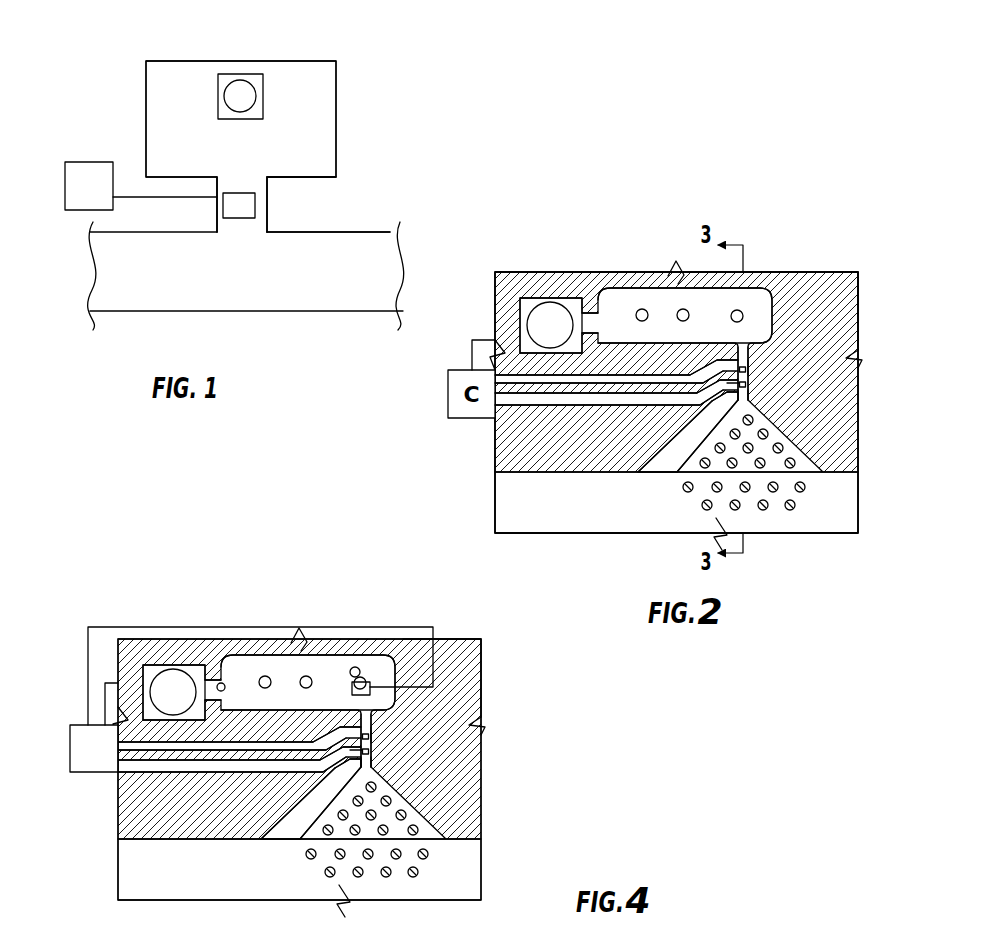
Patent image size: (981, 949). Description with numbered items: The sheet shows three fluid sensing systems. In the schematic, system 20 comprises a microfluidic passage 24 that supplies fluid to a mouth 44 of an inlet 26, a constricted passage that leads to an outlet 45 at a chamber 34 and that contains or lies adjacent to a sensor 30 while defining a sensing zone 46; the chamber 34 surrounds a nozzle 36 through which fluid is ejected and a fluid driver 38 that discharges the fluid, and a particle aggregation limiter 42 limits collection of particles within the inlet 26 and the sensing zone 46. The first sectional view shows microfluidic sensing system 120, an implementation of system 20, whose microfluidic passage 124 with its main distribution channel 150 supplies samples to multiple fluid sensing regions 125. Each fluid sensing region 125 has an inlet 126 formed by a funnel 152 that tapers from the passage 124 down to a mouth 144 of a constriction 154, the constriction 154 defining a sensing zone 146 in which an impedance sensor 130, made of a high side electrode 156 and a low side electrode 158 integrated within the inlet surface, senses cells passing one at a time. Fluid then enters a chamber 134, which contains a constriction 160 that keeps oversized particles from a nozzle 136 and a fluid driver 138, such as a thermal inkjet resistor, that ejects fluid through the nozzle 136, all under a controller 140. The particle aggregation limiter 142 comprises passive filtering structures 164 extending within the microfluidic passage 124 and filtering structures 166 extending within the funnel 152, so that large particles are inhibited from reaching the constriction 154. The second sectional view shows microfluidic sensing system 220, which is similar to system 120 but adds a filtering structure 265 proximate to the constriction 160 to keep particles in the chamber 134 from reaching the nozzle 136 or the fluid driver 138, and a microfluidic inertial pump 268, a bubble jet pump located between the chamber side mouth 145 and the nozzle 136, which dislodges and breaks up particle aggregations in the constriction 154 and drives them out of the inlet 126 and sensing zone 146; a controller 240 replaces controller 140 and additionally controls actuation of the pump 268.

In FIG. 1, the system 20 is at (202, 127).
In FIG. 1, the microfluidic passage 24 is at (246, 249).
In FIG. 1, the inlet 26 is at (279, 204).
In FIG. 1, the sensor 30 is at (239, 277).
In FIG. 1, the chamber 34 is at (267, 146).
In FIG. 1, the nozzle 36 is at (254, 60).
In FIG. 1, the fluid driver 38 is at (217, 61).
In FIG. 1, the particle aggregation limiter 42 is at (84, 160).
In FIG. 1, the mouth 44 is at (325, 258).
In FIG. 1, the outlet 45 is at (299, 150).
In FIG. 1, the sensing zone 46 is at (165, 212).
In FIG. 2, the microfluidic sensing system 120 is at (676, 370).
In FIG. 2, the microfluidic passage 124 is at (709, 405).
In FIG. 4, the microfluidic passage 124 is at (332, 772).
In FIG. 2, the fluid sensing region 125 is at (676, 359).
In FIG. 4, the fluid sensing region 125 is at (299, 691).
In FIG. 2, the inlet 126 is at (831, 378).
In FIG. 4, the inlet 126 is at (454, 745).
In FIG. 2, the sensor 130 is at (702, 342).
In FIG. 4, the sensor 130 is at (323, 709).
In FIG. 2, the chamber 134 is at (685, 271).
In FIG. 4, the chamber 134 is at (308, 634).
In FIG. 2, the nozzle 136 is at (504, 278).
In FIG. 4, the nozzle 136 is at (126, 644).
In FIG. 2, the fluid driver 138 is at (569, 283).
In FIG. 4, the fluid driver 138 is at (111, 692).
In FIG. 2, the controller 140 is at (464, 358).
In FIG. 2, the particle aggregation limiter 142 is at (847, 532).
In FIG. 4, the particle aggregation limiter 142 is at (467, 899).
In FIG. 2, the mouth 144 is at (831, 405).
In FIG. 4, the mouth 144 is at (453, 773).
In FIG. 2, the chamber side mouth 145 is at (853, 300).
In FIG. 4, the chamber side mouth 145 is at (474, 667).
In FIG. 2, the sensing zone 146 is at (616, 443).
In FIG. 4, the sensing zone 146 is at (239, 809).
In FIG. 2, the main distribution channel 150 is at (712, 502).
In FIG. 4, the main distribution channel 150 is at (332, 869).
In FIG. 2, the funnel 152 is at (688, 475).
In FIG. 4, the funnel 152 is at (311, 843).
In FIG. 2, the constriction 154 is at (640, 465).
In FIG. 4, the constriction 154 is at (261, 854).
In FIG. 2, the high side electrode 156 is at (704, 314).
In FIG. 4, the high side electrode 156 is at (346, 680).
In FIG. 2, the low side electrode 158 is at (835, 355).
In FIG. 4, the low side electrode 158 is at (455, 720).
In FIG. 2, the constriction 160 is at (610, 253).
In FIG. 4, the constriction 160 is at (187, 631).
In FIG. 2, the filtering structures 164 is at (744, 533).
In FIG. 4, the filtering structures 164 is at (367, 898).
In FIG. 2, the filtering structures 166 is at (817, 441).
In FIG. 4, the filtering structures 166 is at (439, 808).
In FIG. 4, the microfluidic sensing system 220 is at (229, 660).
In FIG. 4, the controller 240 is at (81, 785).
In FIG. 4, the filtering structure 265 is at (235, 633).
In FIG. 4, the microfluidic inertial pump 268 is at (384, 626).